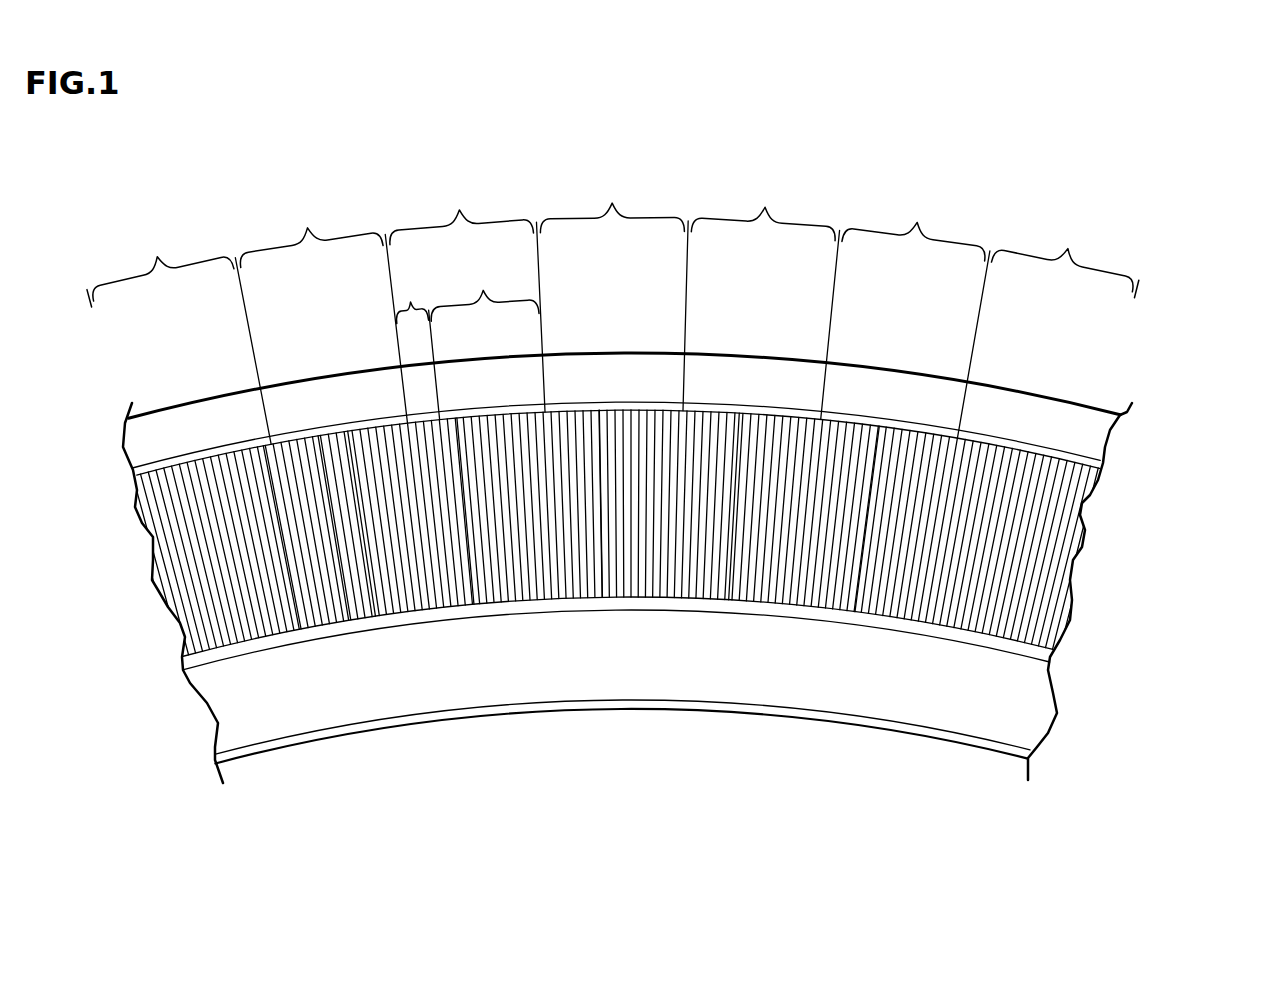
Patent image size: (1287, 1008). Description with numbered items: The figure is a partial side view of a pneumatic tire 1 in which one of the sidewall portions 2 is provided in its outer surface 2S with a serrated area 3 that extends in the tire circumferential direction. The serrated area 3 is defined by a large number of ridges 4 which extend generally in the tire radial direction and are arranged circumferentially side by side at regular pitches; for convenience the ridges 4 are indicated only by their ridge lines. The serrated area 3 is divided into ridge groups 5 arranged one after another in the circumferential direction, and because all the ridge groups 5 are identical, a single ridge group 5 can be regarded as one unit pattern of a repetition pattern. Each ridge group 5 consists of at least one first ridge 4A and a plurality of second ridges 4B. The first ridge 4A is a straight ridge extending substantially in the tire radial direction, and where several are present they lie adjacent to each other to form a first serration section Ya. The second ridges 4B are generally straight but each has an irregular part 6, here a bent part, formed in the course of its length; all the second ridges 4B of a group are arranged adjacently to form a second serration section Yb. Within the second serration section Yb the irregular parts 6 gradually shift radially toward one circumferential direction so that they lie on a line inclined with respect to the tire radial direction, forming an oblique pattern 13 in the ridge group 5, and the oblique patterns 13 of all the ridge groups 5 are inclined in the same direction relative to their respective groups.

The pneumatic tire 1 is at (1113, 357).
The sidewall portion 2 is at (697, 410).
The outer surface 2S is at (1077, 428).
The serrated area 3 is at (1080, 565).
The ridge 4 is at (316, 461).
The first ridge 4A is at (273, 495).
The second ridge 4B is at (357, 480).
The ridge group 5 is at (613, 310).
The irregular part 6 is at (574, 637).
The oblique pattern 13 is at (345, 598).
The first serration section Ya is at (417, 346).
The second serration section Yb is at (484, 291).